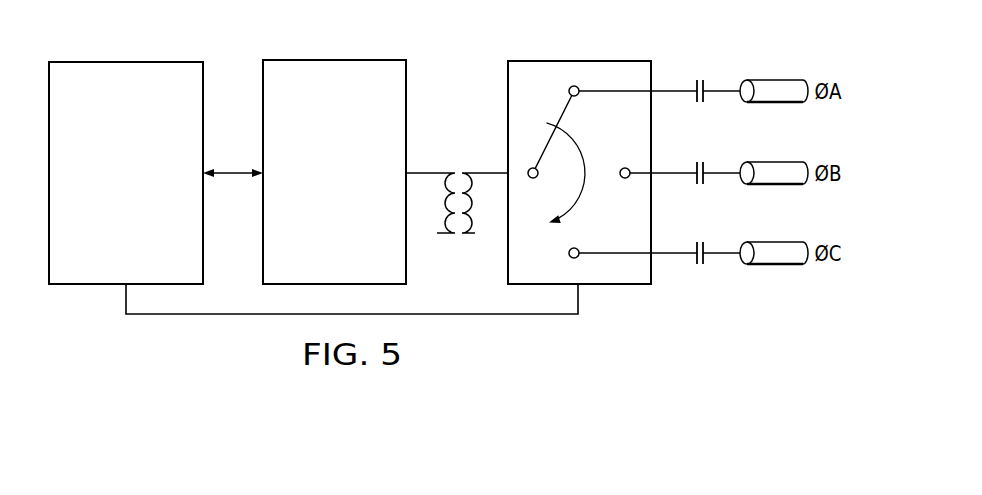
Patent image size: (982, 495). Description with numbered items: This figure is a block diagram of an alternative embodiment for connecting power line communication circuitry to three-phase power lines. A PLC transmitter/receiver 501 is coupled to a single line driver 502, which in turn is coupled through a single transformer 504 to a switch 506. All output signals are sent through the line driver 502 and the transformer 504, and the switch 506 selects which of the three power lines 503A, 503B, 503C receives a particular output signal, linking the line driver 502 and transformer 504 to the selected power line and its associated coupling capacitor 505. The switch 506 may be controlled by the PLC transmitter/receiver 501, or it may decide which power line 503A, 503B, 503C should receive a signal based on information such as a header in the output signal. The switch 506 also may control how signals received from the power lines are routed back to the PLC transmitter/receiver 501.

The PLC transmitter/receiver 501 is at (145, 230).
The line driver 502 is at (356, 204).
The transformer 504 is at (458, 166).
The coupling capacitor 505 is at (701, 78).
The switch 506 is at (590, 60).
The power line 503A is at (773, 79).
The power line 503B is at (773, 161).
The power line 503C is at (773, 266).